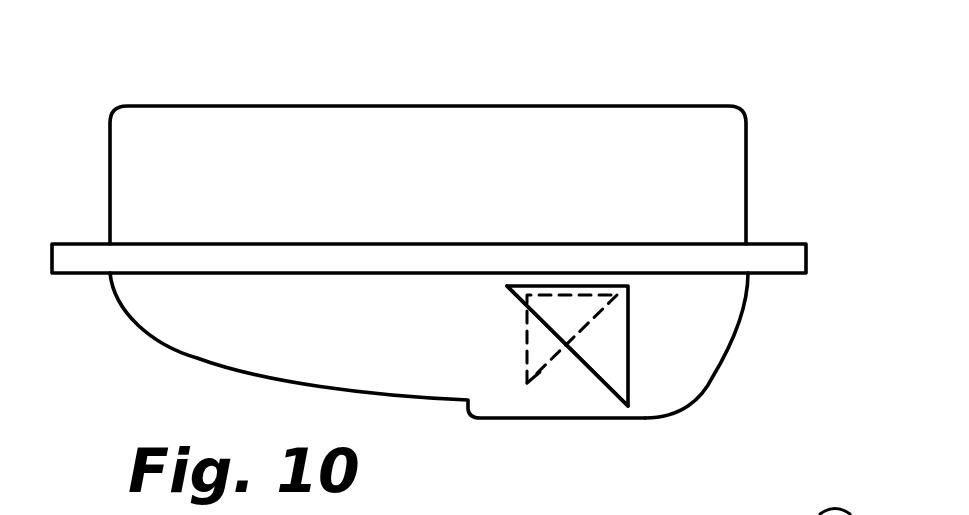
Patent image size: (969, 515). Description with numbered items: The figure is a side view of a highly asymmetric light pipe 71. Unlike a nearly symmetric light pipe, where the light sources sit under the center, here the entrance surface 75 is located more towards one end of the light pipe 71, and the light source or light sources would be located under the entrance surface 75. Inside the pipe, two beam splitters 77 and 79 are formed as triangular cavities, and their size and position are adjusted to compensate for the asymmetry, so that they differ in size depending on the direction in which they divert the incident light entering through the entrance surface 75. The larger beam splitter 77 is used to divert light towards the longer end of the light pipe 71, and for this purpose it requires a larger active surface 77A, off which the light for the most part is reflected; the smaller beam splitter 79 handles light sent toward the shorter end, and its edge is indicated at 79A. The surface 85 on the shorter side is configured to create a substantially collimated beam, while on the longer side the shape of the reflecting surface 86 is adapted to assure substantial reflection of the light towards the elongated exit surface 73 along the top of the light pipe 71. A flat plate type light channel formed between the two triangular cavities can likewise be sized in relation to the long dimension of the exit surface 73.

The light pipe 71 is at (708, 12).
The exit surface 73 is at (208, 106).
The entrance surface 75 is at (610, 420).
The beam splitter 77 is at (628, 348).
The active surface 77A is at (600, 378).
The beam splitter 79 is at (527, 347).
The panel edge 79A is at (557, 358).
The surface 85 is at (197, 358).
The reflecting surface 86 is at (707, 388).